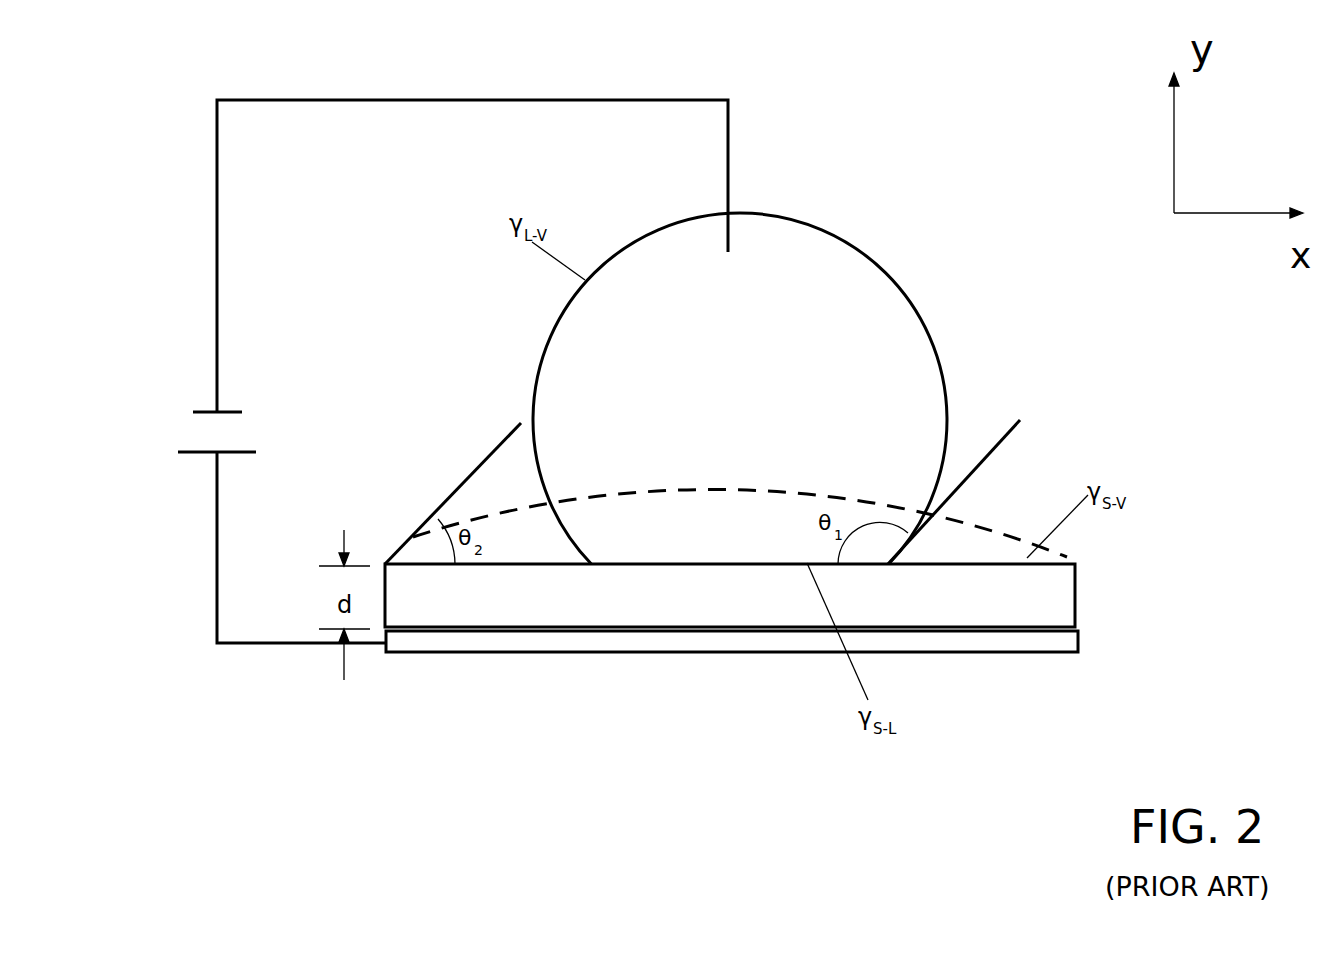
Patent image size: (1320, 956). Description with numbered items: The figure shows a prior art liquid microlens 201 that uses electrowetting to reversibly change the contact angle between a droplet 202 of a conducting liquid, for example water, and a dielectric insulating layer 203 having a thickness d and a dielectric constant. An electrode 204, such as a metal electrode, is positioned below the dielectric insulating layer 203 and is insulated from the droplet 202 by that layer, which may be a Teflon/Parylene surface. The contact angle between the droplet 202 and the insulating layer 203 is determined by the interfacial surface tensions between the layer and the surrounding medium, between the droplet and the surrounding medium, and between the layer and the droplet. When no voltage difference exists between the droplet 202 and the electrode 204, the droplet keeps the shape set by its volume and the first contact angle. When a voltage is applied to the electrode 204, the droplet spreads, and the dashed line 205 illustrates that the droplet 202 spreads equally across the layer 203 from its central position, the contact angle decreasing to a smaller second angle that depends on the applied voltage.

The liquid microlens 201 is at (420, 332).
The droplet 202 is at (857, 248).
The dielectric insulating layer 203 is at (1037, 587).
The electrode 204 is at (627, 640).
The dashed line 205 is at (1020, 520).